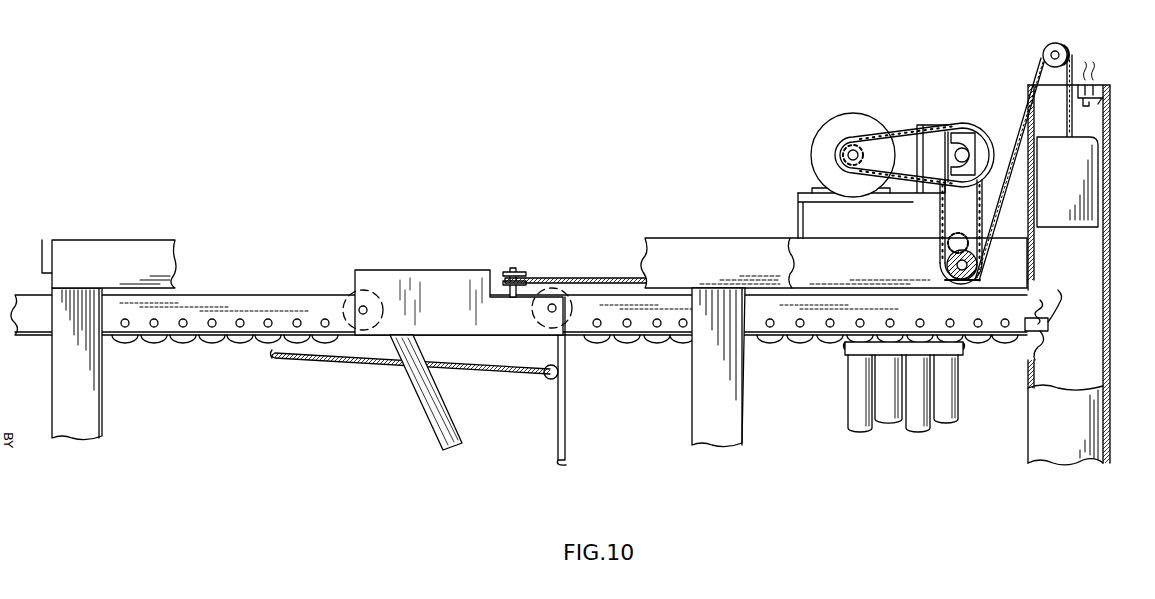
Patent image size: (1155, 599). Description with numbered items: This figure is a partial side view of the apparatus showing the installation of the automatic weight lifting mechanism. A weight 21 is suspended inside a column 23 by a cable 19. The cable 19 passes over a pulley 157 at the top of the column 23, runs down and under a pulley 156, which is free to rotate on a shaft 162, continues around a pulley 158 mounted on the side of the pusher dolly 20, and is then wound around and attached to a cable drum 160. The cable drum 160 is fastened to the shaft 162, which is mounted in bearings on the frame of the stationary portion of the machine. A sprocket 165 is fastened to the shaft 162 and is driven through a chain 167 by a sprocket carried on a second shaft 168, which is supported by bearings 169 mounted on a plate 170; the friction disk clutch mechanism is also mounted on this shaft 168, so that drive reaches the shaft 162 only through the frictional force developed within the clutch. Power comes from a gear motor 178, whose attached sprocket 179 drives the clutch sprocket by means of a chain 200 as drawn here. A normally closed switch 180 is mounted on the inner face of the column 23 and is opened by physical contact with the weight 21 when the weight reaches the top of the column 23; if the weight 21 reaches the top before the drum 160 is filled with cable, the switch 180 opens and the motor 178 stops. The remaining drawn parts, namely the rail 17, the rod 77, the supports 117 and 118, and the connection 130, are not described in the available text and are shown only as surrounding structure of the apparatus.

The conveyor rail 17 is at (618, 325).
The cable 19 is at (600, 277).
The pusher dolly 20 is at (545, 366).
The weight 21 is at (1052, 222).
The column 23 is at (1030, 452).
The actuating rod 77 is at (368, 362).
The left support post 117 is at (84, 403).
The right support post 118 is at (745, 426).
The rail connection 130 is at (1040, 360).
The pulley 156 is at (955, 283).
The pulley 157 is at (1057, 46).
The pulley 158 is at (525, 260).
The cable drum 160 is at (940, 265).
The shaft 162 is at (972, 284).
The sprocket 165 is at (940, 247).
The chain 167 is at (935, 216).
The shaft 168 is at (971, 152).
The bearings 169 is at (970, 133).
The plate 170 is at (920, 157).
The gear motor 178 is at (826, 142).
The sprocket 179 is at (878, 136).
The switch 180 is at (1104, 98).
The drive chain 200 is at (897, 134).